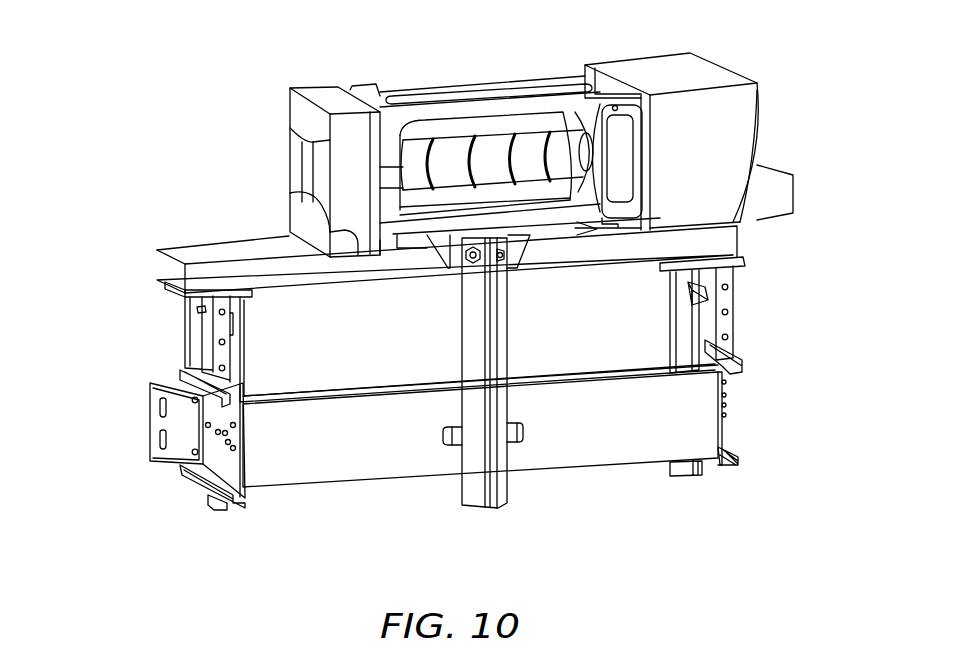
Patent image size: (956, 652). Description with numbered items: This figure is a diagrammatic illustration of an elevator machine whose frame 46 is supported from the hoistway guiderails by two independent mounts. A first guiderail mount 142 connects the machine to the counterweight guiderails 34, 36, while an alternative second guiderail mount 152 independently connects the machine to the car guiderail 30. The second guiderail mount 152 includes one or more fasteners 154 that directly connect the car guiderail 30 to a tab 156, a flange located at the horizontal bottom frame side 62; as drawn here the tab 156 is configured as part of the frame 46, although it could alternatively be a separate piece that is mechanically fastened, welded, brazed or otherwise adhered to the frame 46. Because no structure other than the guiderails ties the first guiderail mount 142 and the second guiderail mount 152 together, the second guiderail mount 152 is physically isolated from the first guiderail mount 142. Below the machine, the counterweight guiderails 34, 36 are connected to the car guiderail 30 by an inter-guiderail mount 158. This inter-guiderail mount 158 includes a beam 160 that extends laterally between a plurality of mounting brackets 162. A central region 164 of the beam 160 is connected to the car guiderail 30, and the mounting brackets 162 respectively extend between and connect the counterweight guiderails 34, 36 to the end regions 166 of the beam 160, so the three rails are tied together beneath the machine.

The car guiderail 30 is at (506, 492).
The counterweight guiderail 34 is at (688, 470).
The counterweight guiderail 36 is at (211, 510).
The frame 46 is at (541, 155).
The bottom frame side 62 is at (390, 252).
The first guiderail mount 142 is at (150, 258).
The second guiderail mount 152 is at (406, 299).
The fasteners 154 is at (468, 272).
The tab 156 is at (612, 257).
The inter-guiderail mount 158 is at (340, 494).
The beam 160 is at (398, 467).
The mounting brackets 162 is at (176, 472).
The central region 164 is at (443, 462).
The end regions 166 is at (288, 462).